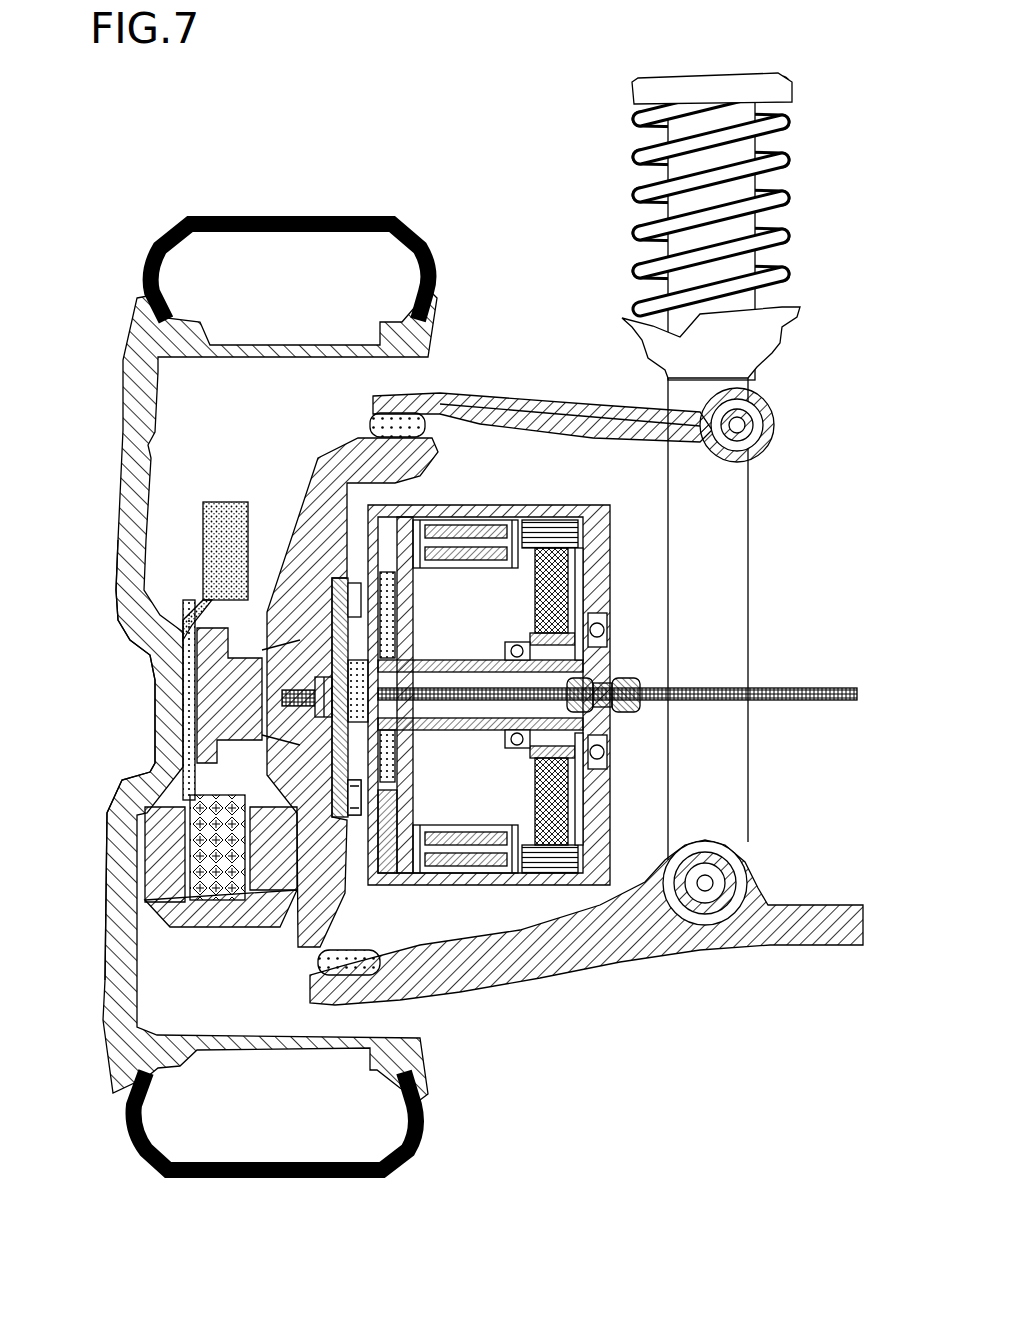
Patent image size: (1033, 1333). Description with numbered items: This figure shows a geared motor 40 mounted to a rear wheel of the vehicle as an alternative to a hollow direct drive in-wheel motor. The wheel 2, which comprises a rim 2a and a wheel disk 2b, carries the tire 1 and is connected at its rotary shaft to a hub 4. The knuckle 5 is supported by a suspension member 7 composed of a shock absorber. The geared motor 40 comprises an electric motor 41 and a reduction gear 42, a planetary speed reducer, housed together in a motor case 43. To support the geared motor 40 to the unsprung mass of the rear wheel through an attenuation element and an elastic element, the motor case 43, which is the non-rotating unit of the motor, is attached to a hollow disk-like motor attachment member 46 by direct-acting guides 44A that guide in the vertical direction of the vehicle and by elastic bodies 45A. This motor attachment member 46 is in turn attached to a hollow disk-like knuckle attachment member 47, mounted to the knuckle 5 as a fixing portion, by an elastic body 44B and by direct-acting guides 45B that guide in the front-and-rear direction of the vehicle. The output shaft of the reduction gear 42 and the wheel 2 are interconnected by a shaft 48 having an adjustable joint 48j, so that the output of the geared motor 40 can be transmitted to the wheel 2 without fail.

The tire 1 is at (350, 214).
The wheel 2 is at (226, 666).
The rim 2a is at (150, 322).
The wheel disk 2b is at (133, 553).
The hub 4 is at (228, 687).
The knuckle 5 is at (353, 465).
The suspension member 7 is at (710, 569).
The geared motor 40 is at (449, 643).
The electric motor 41 is at (450, 543).
The reduction gear 42 is at (565, 625).
The motor case 43 is at (545, 501).
The direct-acting guides 44A is at (387, 757).
The elastic body 44B is at (347, 690).
The elastic bodies 45A is at (402, 863).
The direct-acting guides 45B is at (350, 787).
The motor attachment member 46 is at (397, 585).
The knuckle attachment member 47 is at (346, 578).
The shaft 48 is at (788, 688).
The adjustable joint 48j is at (640, 707).